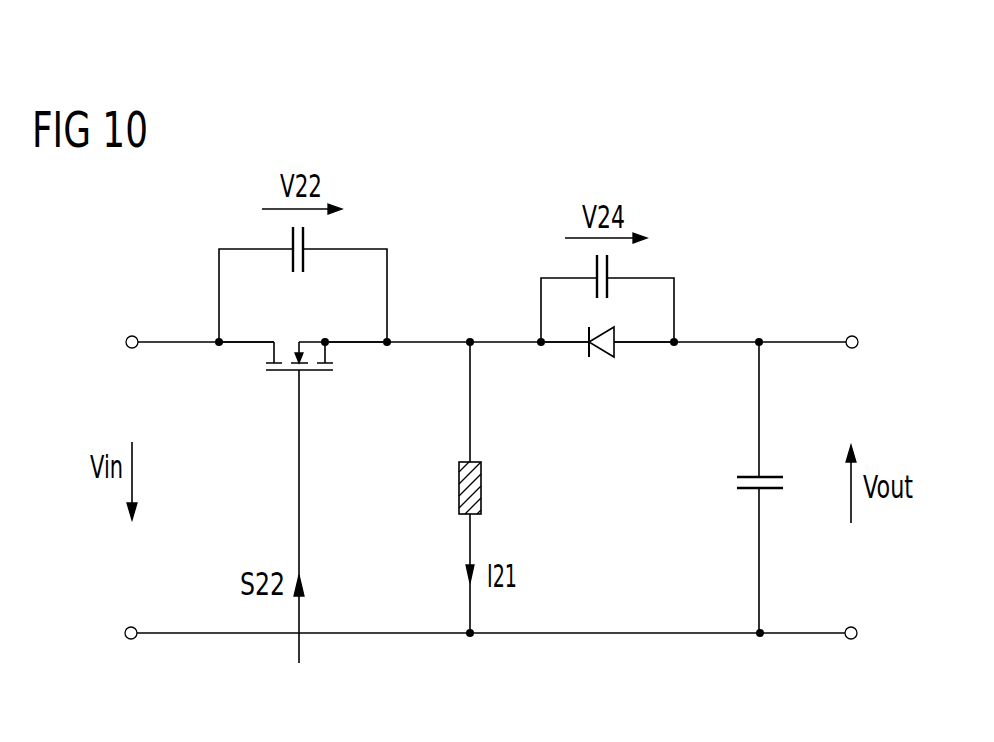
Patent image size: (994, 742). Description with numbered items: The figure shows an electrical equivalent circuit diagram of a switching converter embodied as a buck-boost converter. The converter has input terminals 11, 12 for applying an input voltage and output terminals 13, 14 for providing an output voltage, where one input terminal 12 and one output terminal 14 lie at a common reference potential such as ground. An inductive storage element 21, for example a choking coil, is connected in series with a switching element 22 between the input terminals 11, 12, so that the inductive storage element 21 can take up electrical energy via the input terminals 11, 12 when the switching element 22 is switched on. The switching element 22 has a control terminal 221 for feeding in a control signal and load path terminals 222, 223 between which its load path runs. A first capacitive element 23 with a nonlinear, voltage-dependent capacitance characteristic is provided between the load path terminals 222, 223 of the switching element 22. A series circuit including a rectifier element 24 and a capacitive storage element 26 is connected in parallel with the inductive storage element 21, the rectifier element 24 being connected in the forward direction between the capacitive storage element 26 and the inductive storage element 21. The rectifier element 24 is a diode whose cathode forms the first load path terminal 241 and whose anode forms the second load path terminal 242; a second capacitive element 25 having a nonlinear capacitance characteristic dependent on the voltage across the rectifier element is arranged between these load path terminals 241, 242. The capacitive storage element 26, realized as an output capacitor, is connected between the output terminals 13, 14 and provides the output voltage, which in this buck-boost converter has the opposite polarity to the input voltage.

The input terminal 11 is at (131, 331).
The input terminal 12 is at (131, 641).
The output terminal 13 is at (851, 335).
The output terminal 14 is at (852, 642).
The inductive storage element 21 is at (459, 488).
The switching element 22 is at (303, 466).
The control terminal 221 is at (300, 375).
The load path terminal 222 is at (248, 337).
The load path terminal 223 is at (349, 337).
The capacitive element 23 is at (292, 232).
The rectifier element 24 is at (605, 351).
The load path terminal 241 is at (677, 338).
The load path terminal 242 is at (539, 340).
The capacitive element 25 is at (593, 262).
The capacitive storage element 26 is at (745, 477).